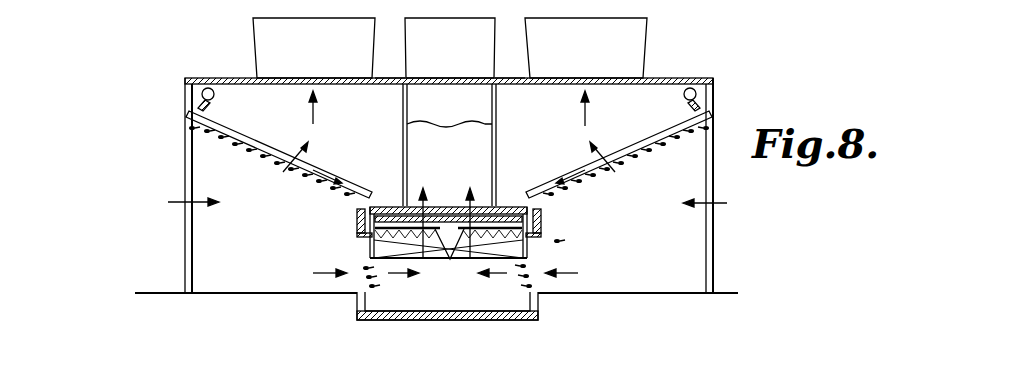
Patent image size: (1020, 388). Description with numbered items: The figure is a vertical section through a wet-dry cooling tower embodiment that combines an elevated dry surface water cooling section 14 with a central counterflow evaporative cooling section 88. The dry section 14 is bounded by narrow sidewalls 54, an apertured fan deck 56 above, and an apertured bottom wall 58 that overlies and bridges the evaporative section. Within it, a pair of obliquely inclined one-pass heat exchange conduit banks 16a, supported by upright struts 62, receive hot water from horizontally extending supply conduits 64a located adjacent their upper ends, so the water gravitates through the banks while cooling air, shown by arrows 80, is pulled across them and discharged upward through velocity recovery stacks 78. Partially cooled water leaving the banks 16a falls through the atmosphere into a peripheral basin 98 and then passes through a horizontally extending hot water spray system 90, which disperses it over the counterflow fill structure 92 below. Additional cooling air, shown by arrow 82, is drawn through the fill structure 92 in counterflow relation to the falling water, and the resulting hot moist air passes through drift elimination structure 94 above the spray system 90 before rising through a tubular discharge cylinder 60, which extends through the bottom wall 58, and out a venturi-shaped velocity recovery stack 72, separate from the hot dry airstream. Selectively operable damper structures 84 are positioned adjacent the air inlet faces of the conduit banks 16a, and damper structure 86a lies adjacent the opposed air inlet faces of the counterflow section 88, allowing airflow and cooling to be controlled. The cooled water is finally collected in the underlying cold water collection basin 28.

The dry surface water cooling section 14 is at (186, 79).
The cold water collection basin 28 is at (538, 300).
The sidewalls 54 is at (186, 96).
The fan deck 56 is at (388, 78).
The bottom wall 58 is at (386, 206).
The tubular cylinders 60 is at (494, 111).
The upright struts 62 is at (712, 258).
The hot water supply conduits 64a is at (214, 94).
The velocity recovery stack 72 is at (493, 40).
The velocity recovery stack 78 is at (265, 32).
The arrows 80 is at (315, 113).
The arrow 82 is at (470, 194).
The damper structures 84 is at (290, 180).
The damper structure 86a is at (363, 267).
The counterflow evaporative cooling section 88 is at (562, 241).
The hot water spray system 90 is at (440, 258).
The counterflow fill structure 92 is at (433, 258).
The drift elimination structure 94 is at (500, 212).
The peripheral basin 98 is at (542, 214).
The one-pass heat exchange conduit banks 16a is at (319, 166).